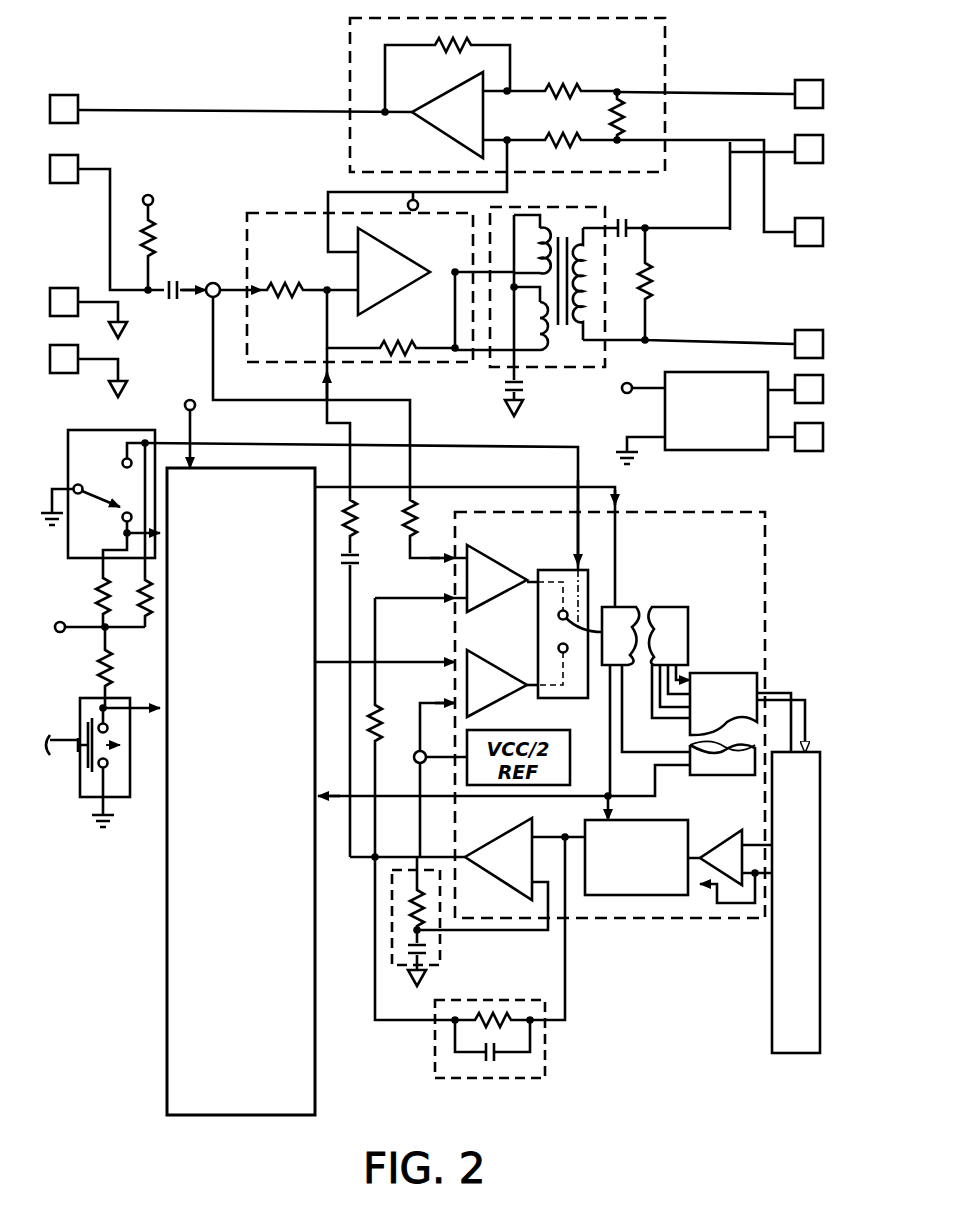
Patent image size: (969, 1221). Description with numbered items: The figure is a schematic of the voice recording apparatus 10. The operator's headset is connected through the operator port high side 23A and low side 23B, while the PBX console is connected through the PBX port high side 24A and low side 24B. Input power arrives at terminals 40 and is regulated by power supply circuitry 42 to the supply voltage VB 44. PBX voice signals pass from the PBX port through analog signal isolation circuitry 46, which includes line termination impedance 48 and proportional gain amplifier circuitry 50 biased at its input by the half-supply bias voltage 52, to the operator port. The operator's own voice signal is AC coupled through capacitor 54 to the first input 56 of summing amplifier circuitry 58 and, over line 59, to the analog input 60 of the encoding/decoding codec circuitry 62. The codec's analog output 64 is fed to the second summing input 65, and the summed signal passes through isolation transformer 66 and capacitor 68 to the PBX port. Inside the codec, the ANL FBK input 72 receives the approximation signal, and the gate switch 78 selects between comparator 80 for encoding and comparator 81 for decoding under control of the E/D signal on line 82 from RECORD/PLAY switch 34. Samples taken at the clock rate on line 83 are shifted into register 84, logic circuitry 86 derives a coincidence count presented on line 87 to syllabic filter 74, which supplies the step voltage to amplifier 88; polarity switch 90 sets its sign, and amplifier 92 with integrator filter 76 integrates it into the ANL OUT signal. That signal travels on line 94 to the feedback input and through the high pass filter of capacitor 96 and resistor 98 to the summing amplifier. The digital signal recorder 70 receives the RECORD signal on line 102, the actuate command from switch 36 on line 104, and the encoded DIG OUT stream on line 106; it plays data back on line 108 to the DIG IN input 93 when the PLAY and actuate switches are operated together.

The voice recording apparatus 10 is at (323, 50).
The operator I/O port high side 23A is at (70, 135).
The operator I/O port low side 23B is at (62, 330).
The PBX I/O port high side 24A is at (790, 120).
The PBX I/O port low side 24B is at (802, 289).
The RECORD/PLAY switch 34 is at (86, 427).
The actuate switch 36 is at (85, 800).
The power input terminals 40 is at (812, 430).
The power supply circuitry 42 is at (717, 450).
The regulated output voltage VB 44 is at (147, 197).
The analog signal isolation circuitry 46 is at (580, 18).
The line termination impedance 48 is at (622, 112).
The proportional gain amplifier circuitry 50 is at (427, 77).
The bias voltage Vcc/2 52 is at (405, 207).
The coupling capacitor 54 is at (184, 280).
The summing amplifier first input 56 is at (246, 282).
The summing amplifier circuitry 58 is at (302, 214).
The analog input line 59 is at (213, 362).
The analog input (ANL IN) 60 is at (440, 538).
The digital signal encoding/decoding circuitry 62 is at (665, 512).
The analog output (ANL OUT) 64 is at (440, 860).
The summing amplifier second input 65 is at (320, 372).
The signal isolation transformer 66 is at (588, 208).
The output coupling capacitor 68 is at (640, 212).
The digital signal recorder circuitry 70 is at (167, 966).
The ANL FBK input 72 is at (445, 609).
The syllabic filter circuitry 74 is at (772, 1040).
The integrator filter 76 is at (545, 1078).
The gate switch 78 is at (562, 702).
The encode comparator 80 is at (506, 564).
The decode comparator 81 is at (485, 674).
The E/D signal line 82 is at (506, 446).
The clock signal line 83 is at (521, 490).
The shift register 84 is at (635, 607).
The logic circuitry 86 is at (731, 673).
The coincidence count line 87 is at (780, 692).
The step voltage amplifier 88 is at (712, 844).
The polarity switch 90 is at (643, 897).
The integrating amplifier 92 is at (484, 839).
The DIG IN input 93 is at (442, 668).
The ANL OUT line 94 is at (354, 858).
The high pass filter capacitor 96 is at (350, 562).
The high pass filter resistor 98 is at (350, 528).
The RECORD discrete signal line 102 is at (150, 610).
The actuate command line 104 is at (145, 712).
The DIG OUT line 106 is at (386, 802).
The DIG DTA OUT line 108 is at (365, 670).